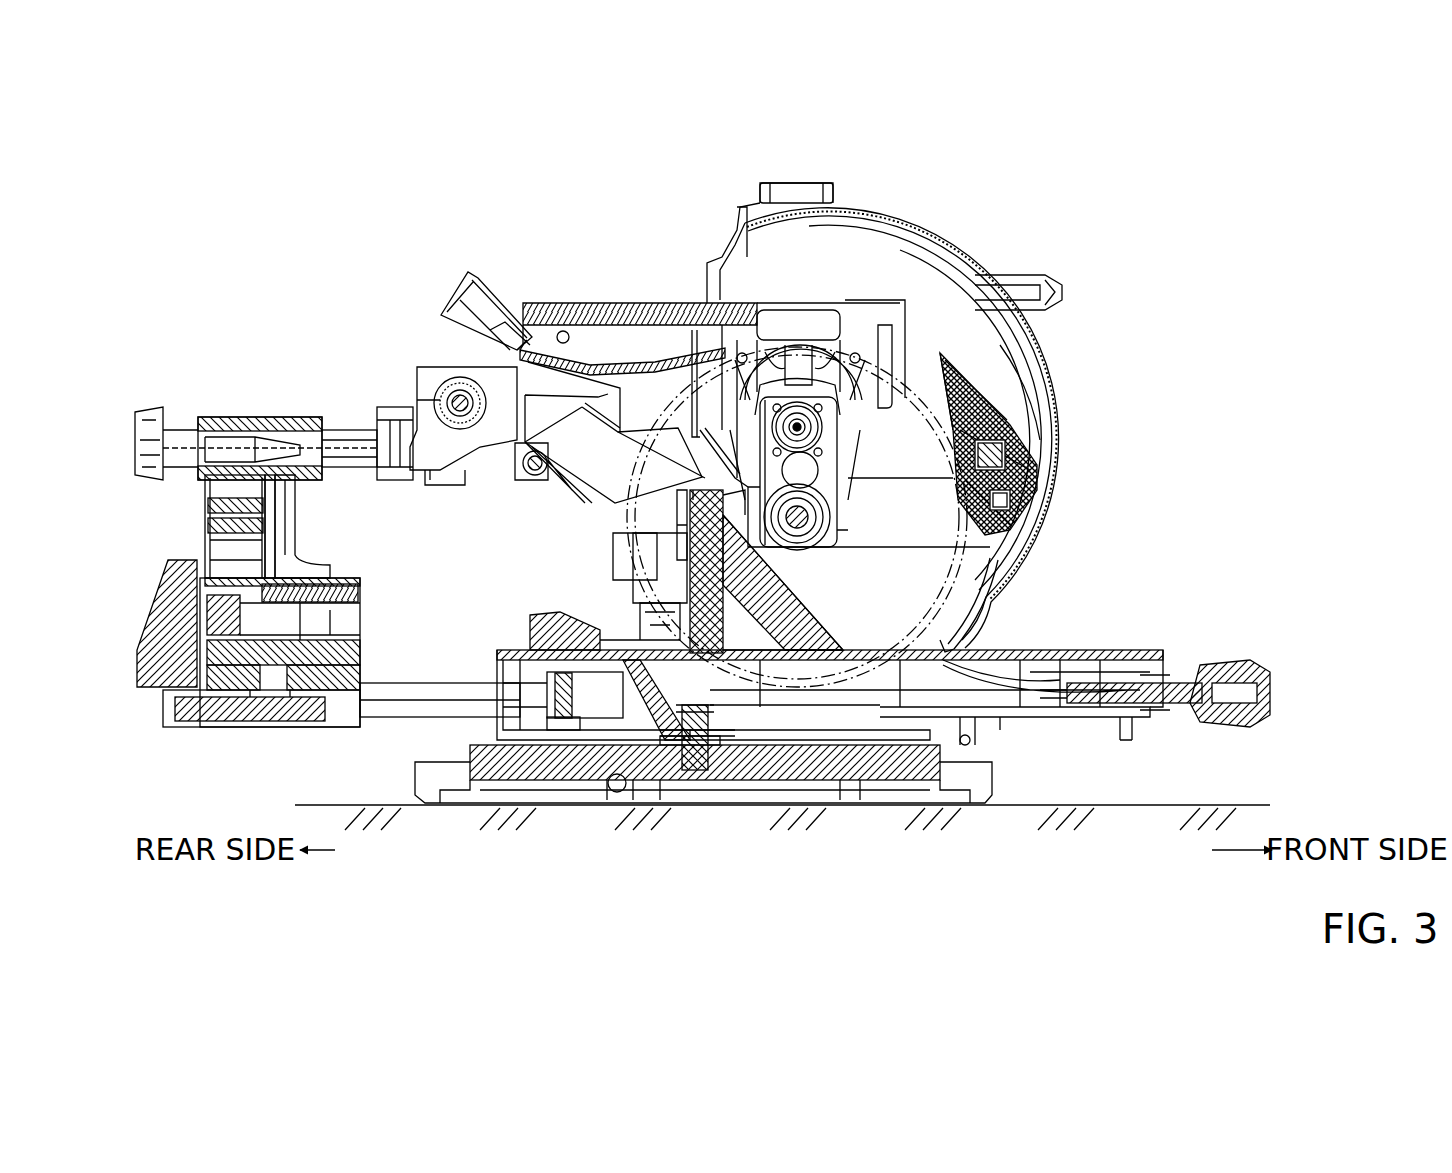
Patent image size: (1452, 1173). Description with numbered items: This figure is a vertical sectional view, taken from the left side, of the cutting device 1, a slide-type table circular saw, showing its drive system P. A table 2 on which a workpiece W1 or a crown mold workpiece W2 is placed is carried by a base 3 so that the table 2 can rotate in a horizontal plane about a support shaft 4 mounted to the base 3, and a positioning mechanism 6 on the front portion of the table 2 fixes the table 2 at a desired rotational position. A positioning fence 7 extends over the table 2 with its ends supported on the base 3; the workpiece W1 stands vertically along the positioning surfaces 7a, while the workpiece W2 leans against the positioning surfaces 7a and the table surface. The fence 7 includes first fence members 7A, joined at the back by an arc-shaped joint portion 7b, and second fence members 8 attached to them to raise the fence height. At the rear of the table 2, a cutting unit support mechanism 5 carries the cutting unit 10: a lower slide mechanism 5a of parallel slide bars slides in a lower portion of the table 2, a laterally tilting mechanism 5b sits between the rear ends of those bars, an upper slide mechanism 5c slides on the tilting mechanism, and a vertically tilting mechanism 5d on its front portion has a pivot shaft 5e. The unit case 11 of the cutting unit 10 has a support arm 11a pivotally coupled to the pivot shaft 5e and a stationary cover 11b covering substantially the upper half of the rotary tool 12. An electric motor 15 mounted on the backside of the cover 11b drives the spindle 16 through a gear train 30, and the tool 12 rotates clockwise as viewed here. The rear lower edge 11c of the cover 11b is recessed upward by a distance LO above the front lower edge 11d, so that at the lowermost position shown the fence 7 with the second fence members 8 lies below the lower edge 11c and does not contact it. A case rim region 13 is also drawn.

The cutting device 1 is at (668, 212).
The table 2 is at (1030, 645).
The base 3 is at (593, 760).
The support shaft 4 is at (707, 740).
The cutting unit support mechanism 5 is at (207, 742).
The lower slide mechanism 5a is at (422, 695).
The laterally tilting mechanism 5b is at (330, 613).
The upper slide mechanism 5c is at (307, 433).
The vertically tilting mechanism 5d is at (410, 395).
The pivot shaft 5e is at (463, 370).
The positioning mechanism 6 is at (1155, 735).
The positioning fence 7 is at (723, 597).
The positioning surfaces 7a is at (770, 625).
The first fence members 7A is at (655, 745).
The arc-shaped joint portion 7b is at (595, 617).
The second fence members 8 is at (735, 549).
The cutting unit 10 is at (1070, 278).
The unit case 11 is at (885, 432).
The support arm 11a is at (485, 362).
The stationary cover 11b is at (885, 432).
The lower edge 11c is at (788, 362).
The lower edge 11d is at (1007, 568).
The rotary tool 12 is at (668, 378).
The blade case rim 13 is at (1040, 357).
The electric motor 15 is at (806, 197).
The spindle 16 is at (975, 441).
The drive system P is at (822, 437).
The gear train 30 is at (822, 437).
The distance LO is at (693, 490).
The workpiece W1 is at (822, 655).
The workpiece W2 is at (815, 632).